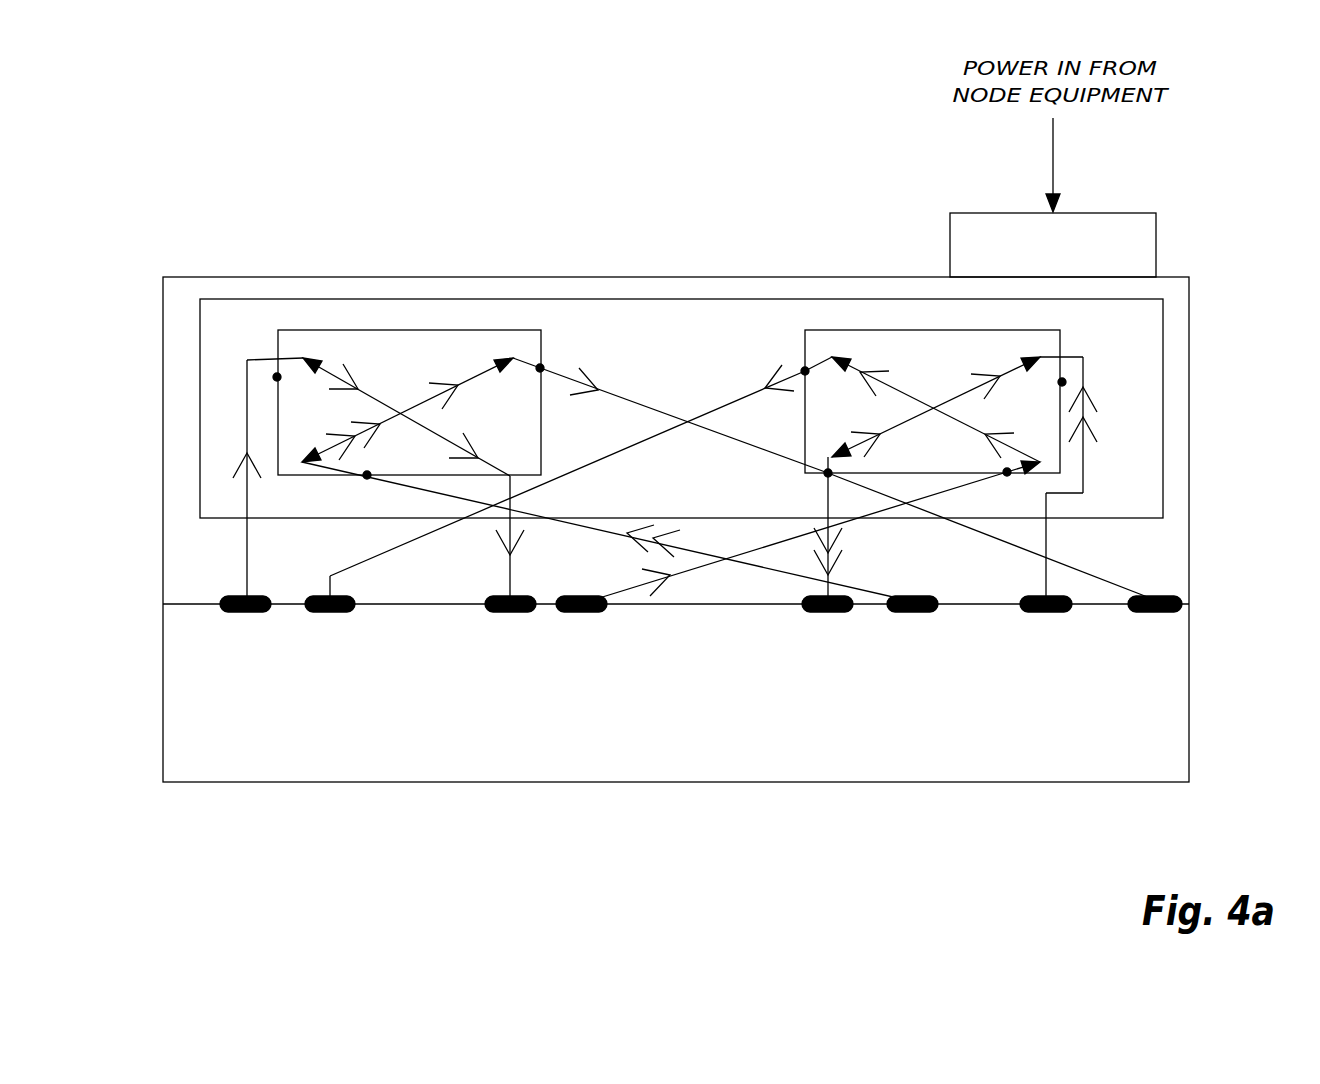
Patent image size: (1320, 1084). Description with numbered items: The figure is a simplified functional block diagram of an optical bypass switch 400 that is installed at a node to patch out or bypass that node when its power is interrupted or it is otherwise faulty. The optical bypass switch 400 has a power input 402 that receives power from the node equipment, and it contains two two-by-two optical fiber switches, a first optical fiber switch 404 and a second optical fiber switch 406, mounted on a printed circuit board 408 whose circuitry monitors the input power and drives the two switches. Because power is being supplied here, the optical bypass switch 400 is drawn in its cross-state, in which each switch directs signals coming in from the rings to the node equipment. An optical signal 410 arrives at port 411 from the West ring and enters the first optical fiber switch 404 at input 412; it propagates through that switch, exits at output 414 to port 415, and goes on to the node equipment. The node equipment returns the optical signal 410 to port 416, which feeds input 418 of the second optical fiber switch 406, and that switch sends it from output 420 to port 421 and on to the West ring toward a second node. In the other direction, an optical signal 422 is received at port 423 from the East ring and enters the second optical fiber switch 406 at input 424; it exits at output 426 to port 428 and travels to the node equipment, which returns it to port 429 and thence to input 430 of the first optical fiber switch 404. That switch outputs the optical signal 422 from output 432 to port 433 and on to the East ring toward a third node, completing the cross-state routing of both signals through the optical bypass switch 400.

The optical bypass switch 400 is at (1190, 410).
The power input 402 is at (1158, 246).
The first 2×2 optical fiber switch 404 is at (388, 333).
The second 2×2 optical fiber switch 406 is at (933, 330).
The printed circuit board 408 is at (1145, 513).
The optical signal 410 is at (247, 553).
The port 411 is at (247, 613).
The input 412 is at (277, 377).
The output 414 is at (547, 467).
The port 415 is at (510, 613).
The port 416 is at (582, 613).
The input 418 is at (1008, 474).
The output 420 is at (805, 371).
The port 421 is at (352, 613).
The optical signal 422 is at (1083, 493).
The port 423 is at (1045, 613).
The input 424 is at (1066, 384).
The output 426 is at (828, 473).
The port 428 is at (827, 613).
The port 429 is at (912, 613).
The input 430 is at (367, 487).
The output 432 is at (546, 369).
The port 433 is at (1155, 613).